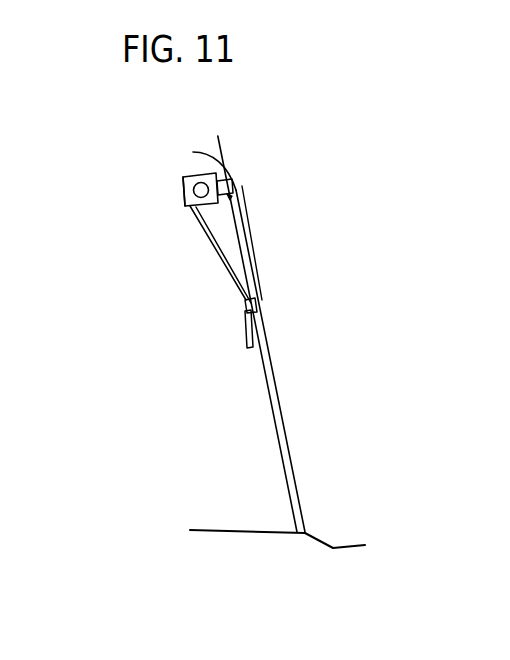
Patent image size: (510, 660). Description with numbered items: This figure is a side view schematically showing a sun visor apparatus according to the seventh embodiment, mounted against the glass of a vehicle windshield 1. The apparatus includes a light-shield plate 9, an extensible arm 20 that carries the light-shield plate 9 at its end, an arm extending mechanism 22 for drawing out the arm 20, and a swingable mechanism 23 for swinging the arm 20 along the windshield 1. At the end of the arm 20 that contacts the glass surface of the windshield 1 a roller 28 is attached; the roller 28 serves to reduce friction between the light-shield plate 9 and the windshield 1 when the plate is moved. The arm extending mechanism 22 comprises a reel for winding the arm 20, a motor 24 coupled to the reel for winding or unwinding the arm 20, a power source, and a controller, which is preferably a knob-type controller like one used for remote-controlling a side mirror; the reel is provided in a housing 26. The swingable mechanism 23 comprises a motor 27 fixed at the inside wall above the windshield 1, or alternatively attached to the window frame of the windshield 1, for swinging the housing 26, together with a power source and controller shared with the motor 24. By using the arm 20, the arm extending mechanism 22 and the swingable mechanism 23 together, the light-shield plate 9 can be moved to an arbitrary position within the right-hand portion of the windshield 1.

The windshield 1 is at (277, 440).
The light-shield plate 9 is at (240, 335).
The extensible arm 20 is at (222, 263).
The arm extending mechanism 22 is at (182, 200).
The swingable mechanism 23 is at (233, 201).
The motor 24 is at (185, 179).
The housing 26 is at (183, 190).
The motor 27 is at (239, 186).
The roller 28 is at (257, 302).